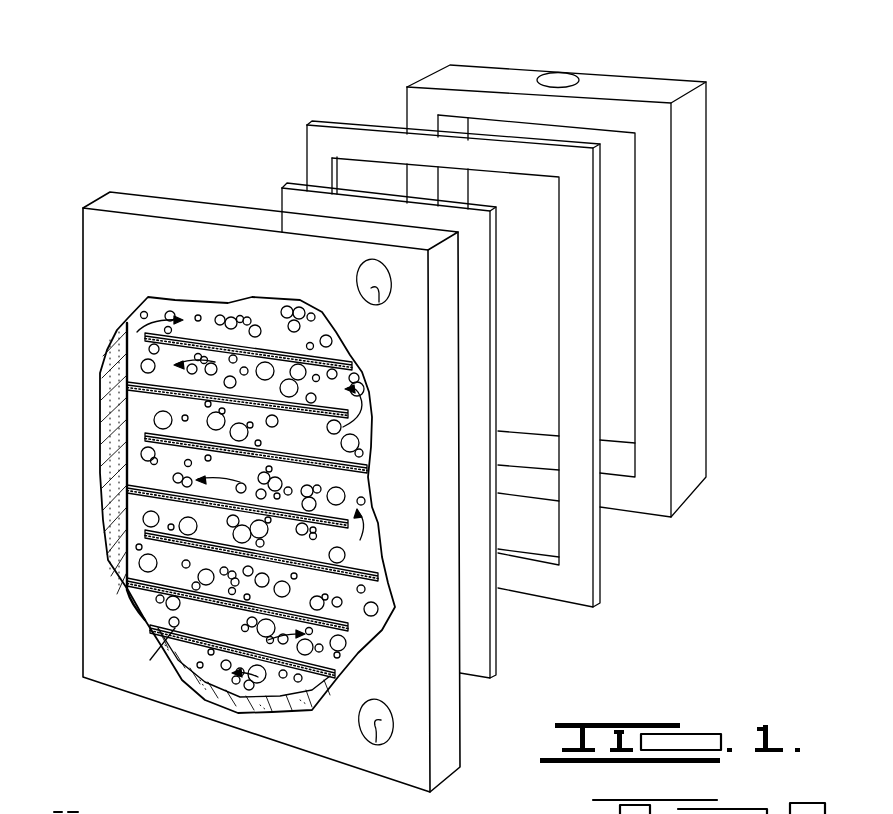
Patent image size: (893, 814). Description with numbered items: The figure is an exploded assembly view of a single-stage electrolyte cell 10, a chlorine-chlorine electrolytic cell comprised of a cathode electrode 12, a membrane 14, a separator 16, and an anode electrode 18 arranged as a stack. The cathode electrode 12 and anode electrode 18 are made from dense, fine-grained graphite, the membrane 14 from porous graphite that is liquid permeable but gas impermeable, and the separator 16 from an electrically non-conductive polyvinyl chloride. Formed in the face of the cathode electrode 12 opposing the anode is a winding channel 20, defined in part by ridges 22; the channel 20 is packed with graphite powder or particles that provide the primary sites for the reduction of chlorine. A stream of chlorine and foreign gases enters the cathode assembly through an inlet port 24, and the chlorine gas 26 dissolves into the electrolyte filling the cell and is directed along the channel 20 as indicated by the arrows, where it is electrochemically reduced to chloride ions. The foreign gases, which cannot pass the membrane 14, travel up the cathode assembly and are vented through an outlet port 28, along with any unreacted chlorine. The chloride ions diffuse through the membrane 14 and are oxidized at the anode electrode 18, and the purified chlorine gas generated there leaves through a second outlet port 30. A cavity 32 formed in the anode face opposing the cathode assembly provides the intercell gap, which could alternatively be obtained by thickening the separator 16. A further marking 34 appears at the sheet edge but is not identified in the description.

The single-stage electrolyte cell 10 is at (746, 508).
The cathode electrode 12 is at (124, 662).
The membrane 14 is at (483, 642).
The separator 16 is at (580, 567).
The anode electrode 18 is at (590, 303).
The winding channel 20 is at (143, 366).
The ridges 22 is at (133, 497).
The inlet port 24 is at (376, 742).
The chlorine gas 26 is at (138, 415).
The outlet port 28 is at (378, 303).
The second outlet port 30 is at (563, 76).
The cavity 32 is at (618, 318).
The element 34 is at (102, 802).